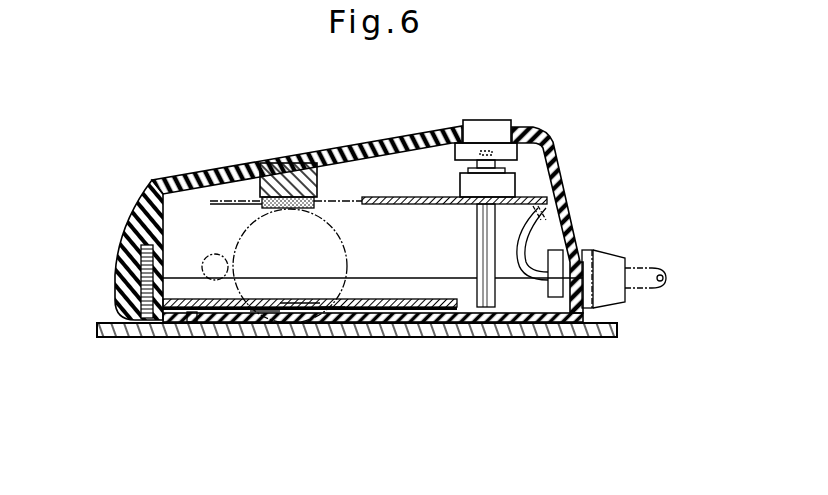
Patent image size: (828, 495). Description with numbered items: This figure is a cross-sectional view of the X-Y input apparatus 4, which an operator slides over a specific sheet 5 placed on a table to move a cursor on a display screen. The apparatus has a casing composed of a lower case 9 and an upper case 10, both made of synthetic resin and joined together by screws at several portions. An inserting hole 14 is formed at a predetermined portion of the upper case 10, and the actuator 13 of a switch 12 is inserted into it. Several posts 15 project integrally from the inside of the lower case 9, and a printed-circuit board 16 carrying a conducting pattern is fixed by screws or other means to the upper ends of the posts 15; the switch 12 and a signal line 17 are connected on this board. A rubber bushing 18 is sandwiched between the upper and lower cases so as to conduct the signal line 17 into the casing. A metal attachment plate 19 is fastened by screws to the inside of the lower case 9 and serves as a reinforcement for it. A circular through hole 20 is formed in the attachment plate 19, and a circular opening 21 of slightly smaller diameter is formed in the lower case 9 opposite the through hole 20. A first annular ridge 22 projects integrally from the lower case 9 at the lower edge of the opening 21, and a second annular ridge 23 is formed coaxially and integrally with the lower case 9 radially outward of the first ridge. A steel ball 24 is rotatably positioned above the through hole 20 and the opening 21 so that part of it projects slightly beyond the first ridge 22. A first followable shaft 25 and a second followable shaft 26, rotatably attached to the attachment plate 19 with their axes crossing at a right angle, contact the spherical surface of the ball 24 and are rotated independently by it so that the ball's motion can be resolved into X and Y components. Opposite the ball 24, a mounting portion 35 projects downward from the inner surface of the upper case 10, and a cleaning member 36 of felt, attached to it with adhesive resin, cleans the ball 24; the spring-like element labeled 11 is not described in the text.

The X-Y input apparatus 4 is at (546, 126).
The sheet 5 is at (592, 337).
The lower case 9 is at (437, 320).
The upper case 10 is at (413, 135).
The spring 11 is at (148, 319).
The switch 12 is at (507, 187).
The actuator 13 is at (497, 126).
The inserting hole 14 is at (468, 122).
The post 15 is at (482, 302).
The printed-circuit board 16 is at (408, 197).
The signal line 17 is at (652, 267).
The rubber bushing 18 is at (598, 248).
The attachment plate 19 is at (413, 310).
The through hole 20 is at (300, 304).
The opening 21 is at (265, 312).
The first annular ridge 22 is at (330, 309).
The second annular ridge 23 is at (196, 323).
The steel ball 24 is at (348, 262).
The first followable shaft 25 is at (203, 257).
The second followable shaft 26 is at (207, 244).
The mounting portion 35 is at (300, 171).
The cleaning member 36 is at (276, 196).